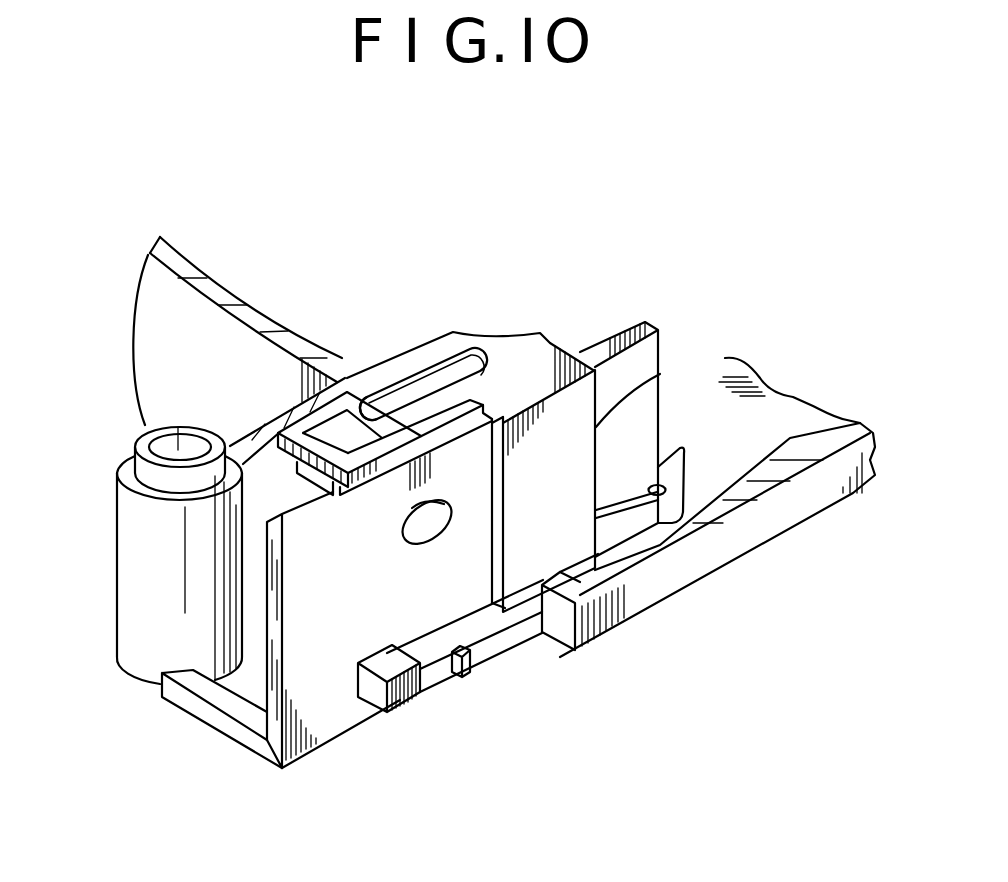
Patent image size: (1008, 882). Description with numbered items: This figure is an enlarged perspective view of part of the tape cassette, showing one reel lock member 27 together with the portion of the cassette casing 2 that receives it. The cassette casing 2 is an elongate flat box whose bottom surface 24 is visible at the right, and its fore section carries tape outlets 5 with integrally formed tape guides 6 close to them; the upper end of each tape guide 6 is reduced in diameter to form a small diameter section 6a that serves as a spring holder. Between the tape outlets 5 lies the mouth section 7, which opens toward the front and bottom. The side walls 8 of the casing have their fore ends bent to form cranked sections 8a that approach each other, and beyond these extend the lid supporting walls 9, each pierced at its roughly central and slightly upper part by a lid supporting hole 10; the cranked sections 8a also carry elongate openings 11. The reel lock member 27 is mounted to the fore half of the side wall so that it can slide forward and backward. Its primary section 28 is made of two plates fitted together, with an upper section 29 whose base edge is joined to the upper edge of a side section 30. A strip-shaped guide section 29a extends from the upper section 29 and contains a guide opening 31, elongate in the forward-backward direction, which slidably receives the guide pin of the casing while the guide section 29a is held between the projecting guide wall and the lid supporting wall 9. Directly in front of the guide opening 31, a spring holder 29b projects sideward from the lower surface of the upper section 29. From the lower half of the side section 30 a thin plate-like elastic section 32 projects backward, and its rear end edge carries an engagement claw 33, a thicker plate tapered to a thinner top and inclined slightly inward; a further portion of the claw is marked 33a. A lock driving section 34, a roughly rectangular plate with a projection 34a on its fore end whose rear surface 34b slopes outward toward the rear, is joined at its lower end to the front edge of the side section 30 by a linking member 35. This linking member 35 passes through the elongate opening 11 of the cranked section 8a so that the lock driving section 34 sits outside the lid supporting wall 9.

The cassette casing 2 is at (807, 522).
The tape outlets 5 is at (254, 692).
The tape guides 6 is at (150, 568).
The small diameter sections 6a is at (135, 472).
The mouth section 7 is at (173, 340).
The side walls 8 is at (720, 547).
The cranked sections 8a is at (562, 625).
The lid supporting walls 9 is at (322, 693).
The lid supporting holes 10 is at (400, 531).
The elongate openings 11 is at (521, 632).
The bottom surface 24 is at (797, 413).
The reel lock member 27 is at (527, 338).
The primary section 28 is at (545, 363).
The upper section 29 is at (495, 347).
The guide section 29a is at (380, 386).
The spring holder 29b is at (341, 446).
The side section 30 is at (582, 427).
The guide opening 31 is at (427, 372).
The elastic section 32 is at (630, 533).
The engagement claw 33 is at (672, 420).
The boss surface 33a is at (735, 401).
The lock driving section 34 is at (367, 703).
The projection 34a is at (407, 690).
The rear surface 34b is at (405, 652).
The linking member 35 is at (435, 655).